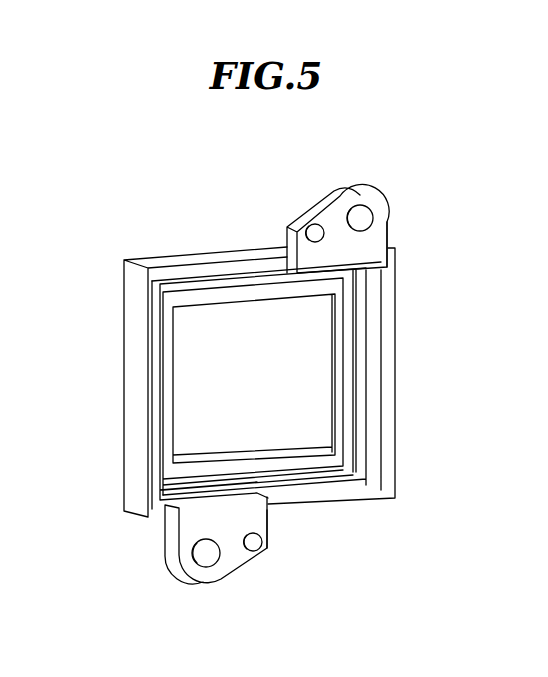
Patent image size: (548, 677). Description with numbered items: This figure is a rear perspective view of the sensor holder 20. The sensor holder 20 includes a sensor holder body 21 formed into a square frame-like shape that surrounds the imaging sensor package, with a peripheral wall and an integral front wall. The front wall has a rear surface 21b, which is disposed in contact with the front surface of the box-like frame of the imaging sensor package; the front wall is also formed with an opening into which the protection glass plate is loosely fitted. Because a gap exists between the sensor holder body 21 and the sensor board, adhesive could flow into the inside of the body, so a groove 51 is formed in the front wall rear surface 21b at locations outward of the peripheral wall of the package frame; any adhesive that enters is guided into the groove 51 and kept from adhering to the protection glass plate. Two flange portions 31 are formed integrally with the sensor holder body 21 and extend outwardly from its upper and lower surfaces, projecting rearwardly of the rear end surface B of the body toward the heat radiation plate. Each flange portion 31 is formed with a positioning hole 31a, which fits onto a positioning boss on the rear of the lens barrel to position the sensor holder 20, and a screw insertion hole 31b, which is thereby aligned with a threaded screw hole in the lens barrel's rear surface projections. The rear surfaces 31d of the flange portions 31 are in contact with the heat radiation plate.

The sensor holder 20 is at (253, 382).
The sensor holder body 21 is at (127, 412).
The rear end surface B is at (146, 450).
The rear surface 21b is at (342, 393).
The groove 51 is at (355, 327).
The flange portion 31 is at (277, 391).
The positioning hole 31a is at (320, 224).
The screw insertion hole 31b is at (373, 216).
The rear surface 31d is at (380, 237).